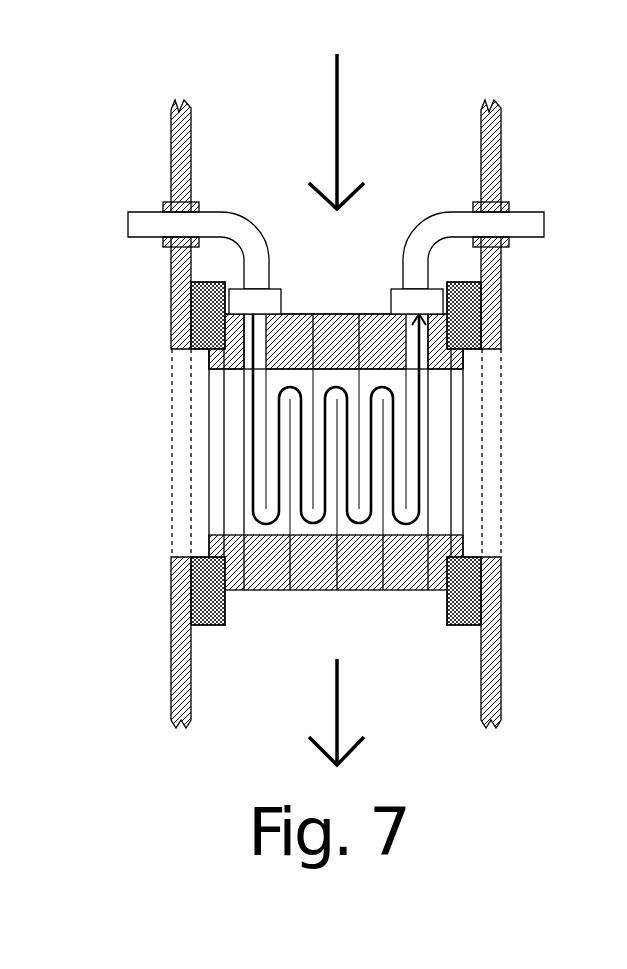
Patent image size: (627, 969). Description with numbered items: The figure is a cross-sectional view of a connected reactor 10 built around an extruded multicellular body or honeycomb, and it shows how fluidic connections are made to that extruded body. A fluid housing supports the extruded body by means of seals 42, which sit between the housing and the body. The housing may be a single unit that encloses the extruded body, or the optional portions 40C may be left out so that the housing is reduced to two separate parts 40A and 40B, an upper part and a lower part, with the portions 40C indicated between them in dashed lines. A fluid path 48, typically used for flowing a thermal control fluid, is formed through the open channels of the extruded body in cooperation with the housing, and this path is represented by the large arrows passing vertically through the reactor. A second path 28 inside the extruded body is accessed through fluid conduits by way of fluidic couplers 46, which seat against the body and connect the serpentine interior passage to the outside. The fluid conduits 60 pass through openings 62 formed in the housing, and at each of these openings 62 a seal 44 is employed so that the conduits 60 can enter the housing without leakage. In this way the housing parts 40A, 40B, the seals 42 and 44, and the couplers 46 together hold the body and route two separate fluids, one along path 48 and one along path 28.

The connected reactor 10 is at (131, 101).
The path 28 is at (306, 534).
The housing part 40A is at (181, 700).
The housing part 40B is at (186, 150).
The housing portions 40C is at (172, 438).
The seals 42 is at (196, 306).
The seal 44 is at (200, 200).
The fluidic couplers 46 is at (273, 294).
The fluid path 48 is at (337, 123).
The fluid conduits 60 is at (142, 228).
The openings 62 is at (153, 205).